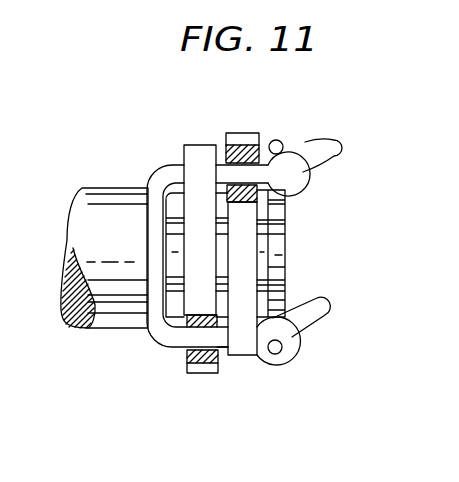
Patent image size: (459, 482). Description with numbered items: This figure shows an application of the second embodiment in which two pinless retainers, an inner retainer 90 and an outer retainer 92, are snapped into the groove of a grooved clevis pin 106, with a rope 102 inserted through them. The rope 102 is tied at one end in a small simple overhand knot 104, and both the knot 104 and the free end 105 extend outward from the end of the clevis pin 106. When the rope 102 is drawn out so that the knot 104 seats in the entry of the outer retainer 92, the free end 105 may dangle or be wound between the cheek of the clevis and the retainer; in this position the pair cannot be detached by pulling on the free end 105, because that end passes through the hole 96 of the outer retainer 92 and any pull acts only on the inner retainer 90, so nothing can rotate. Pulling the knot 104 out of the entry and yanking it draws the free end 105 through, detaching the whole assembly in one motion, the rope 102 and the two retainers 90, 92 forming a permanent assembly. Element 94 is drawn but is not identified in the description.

The inner retainer 90 is at (203, 144).
The outer retainer 92 is at (262, 376).
The lower crimp sleeve 94 is at (185, 358).
The hole 96 is at (247, 143).
The rope 102 is at (158, 178).
The knot 104 is at (251, 371).
The free end 105 is at (334, 168).
The grooved clevis pin 106 is at (102, 187).